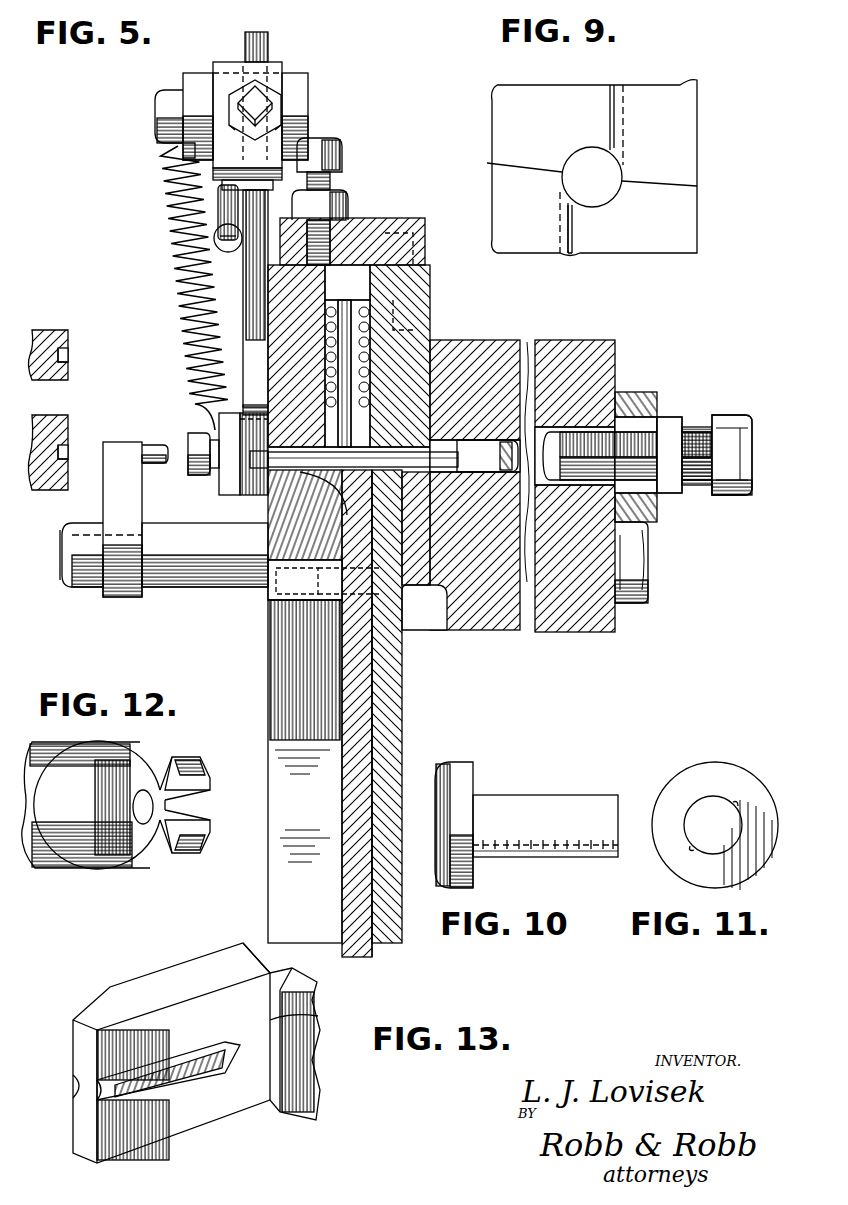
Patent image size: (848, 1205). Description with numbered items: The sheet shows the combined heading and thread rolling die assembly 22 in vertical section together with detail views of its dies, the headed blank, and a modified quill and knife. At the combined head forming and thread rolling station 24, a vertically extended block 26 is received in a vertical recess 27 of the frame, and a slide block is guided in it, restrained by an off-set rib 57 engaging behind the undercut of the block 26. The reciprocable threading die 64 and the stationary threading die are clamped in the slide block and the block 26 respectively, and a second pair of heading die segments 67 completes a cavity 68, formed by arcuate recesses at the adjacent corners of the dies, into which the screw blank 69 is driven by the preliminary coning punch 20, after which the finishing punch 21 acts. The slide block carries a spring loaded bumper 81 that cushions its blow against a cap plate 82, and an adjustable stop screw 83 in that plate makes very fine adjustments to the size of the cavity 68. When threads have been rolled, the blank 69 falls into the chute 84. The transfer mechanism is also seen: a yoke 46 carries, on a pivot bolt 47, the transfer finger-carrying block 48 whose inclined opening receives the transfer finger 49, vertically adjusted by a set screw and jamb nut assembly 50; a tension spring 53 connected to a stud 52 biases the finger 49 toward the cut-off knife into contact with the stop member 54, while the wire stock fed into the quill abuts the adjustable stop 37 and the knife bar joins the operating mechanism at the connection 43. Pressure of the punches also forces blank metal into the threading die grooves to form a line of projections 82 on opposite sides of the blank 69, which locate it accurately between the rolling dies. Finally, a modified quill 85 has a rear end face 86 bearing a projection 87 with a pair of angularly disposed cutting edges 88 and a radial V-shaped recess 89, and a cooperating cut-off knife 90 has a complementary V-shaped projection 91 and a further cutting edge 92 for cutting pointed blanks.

In FIG. 5, the preliminary coning punch 20 is at (47, 332).
In FIG. 5, the finishing punch 21 is at (50, 418).
In FIG. 5, the combined heading and thread rolling die assembly 22 is at (492, 354).
In FIG. 5, the combined head forming and thread rolling station 24 is at (262, 485).
In FIG. 9, the combined head forming and thread rolling station 24 is at (582, 140).
In FIG. 5, the block 26 is at (431, 281).
In FIG. 5, the vertical recess 27 is at (440, 345).
In FIG. 5, the adjustable stop 37 is at (156, 445).
In FIG. 5, the connection of bar to operating member 43 is at (189, 468).
In FIG. 5, the yoke 46 is at (300, 86).
In FIG. 5, the pivot bolt 47 is at (157, 104).
In FIG. 5, the transfer finger-carrying block 48 is at (272, 70).
In FIG. 5, the transfer finger 49 is at (247, 38).
In FIG. 5, the set screw and jamb nut assembly 50 is at (277, 116).
In FIG. 5, the stud 52 is at (218, 220).
In FIG. 5, the tension spring 53 is at (222, 240).
In FIG. 5, the stop member 54 is at (243, 301).
In FIG. 5, the off-set rib 57 is at (396, 467).
In FIG. 9, the reciprocable threading die 64 is at (688, 118).
In FIG. 9, the heading die segment 67 is at (667, 248).
In FIG. 5, the cavity 68 is at (360, 481).
In FIG. 9, the cavity 68 is at (598, 208).
In FIG. 5, the screw blank 69 is at (338, 432).
In FIG. 10, the screw blank 69 is at (506, 801).
In FIG. 11, the screw blank 69 is at (698, 790).
In FIG. 5, the spring loaded bumper 81 is at (358, 295).
In FIG. 5, the cap plate 82 is at (352, 228).
In FIG. 10, the cap plate 82 is at (580, 845).
In FIG. 11, the cap plate 82 is at (737, 800).
In FIG. 5, the adjustable stop screw 83 is at (342, 180).
In FIG. 5, the chute 84 is at (282, 658).
In FIG. 12, the modified quill 85 is at (80, 863).
In FIG. 12, the rear end face 86 is at (160, 757).
In FIG. 12, the projection 87 is at (200, 776).
In FIG. 12, the cutting edges 88 is at (205, 816).
In FIG. 12, the V-shaped recess 89 is at (200, 800).
In FIG. 13, the cut-off knife 90 is at (190, 970).
In FIG. 13, the V-shaped projection 91 is at (176, 1055).
In FIG. 13, the cutting edge 92 is at (318, 1016).